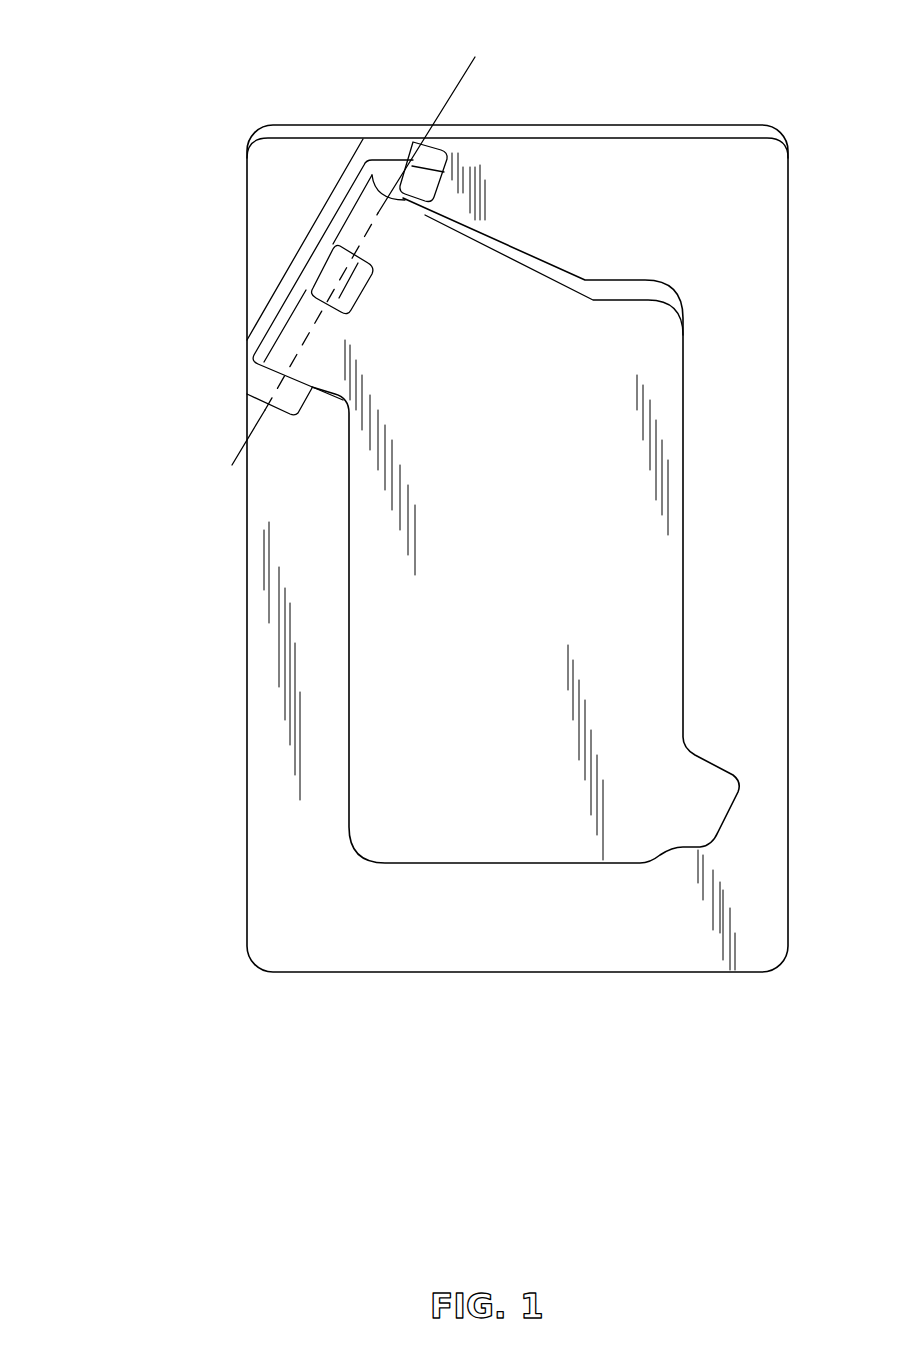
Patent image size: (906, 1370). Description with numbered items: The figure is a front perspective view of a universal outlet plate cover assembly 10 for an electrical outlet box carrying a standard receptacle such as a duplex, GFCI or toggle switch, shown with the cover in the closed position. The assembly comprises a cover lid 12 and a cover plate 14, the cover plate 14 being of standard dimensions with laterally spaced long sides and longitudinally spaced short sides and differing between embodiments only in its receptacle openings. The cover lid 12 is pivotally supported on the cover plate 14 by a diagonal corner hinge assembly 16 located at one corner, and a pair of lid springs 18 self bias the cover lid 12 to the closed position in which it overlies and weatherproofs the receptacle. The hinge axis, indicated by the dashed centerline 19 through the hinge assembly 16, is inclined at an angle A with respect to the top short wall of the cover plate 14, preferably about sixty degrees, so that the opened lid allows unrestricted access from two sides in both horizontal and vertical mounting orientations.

The universal outlet plate cover assembly 10 is at (688, 88).
The cover lid 12 is at (348, 572).
The cover plate 14 is at (247, 688).
The diagonal corner hinge assembly 16 is at (335, 180).
The lid springs 18 is at (345, 218).
The bracket axis 19 is at (233, 465).
The angle A is at (517, 124).